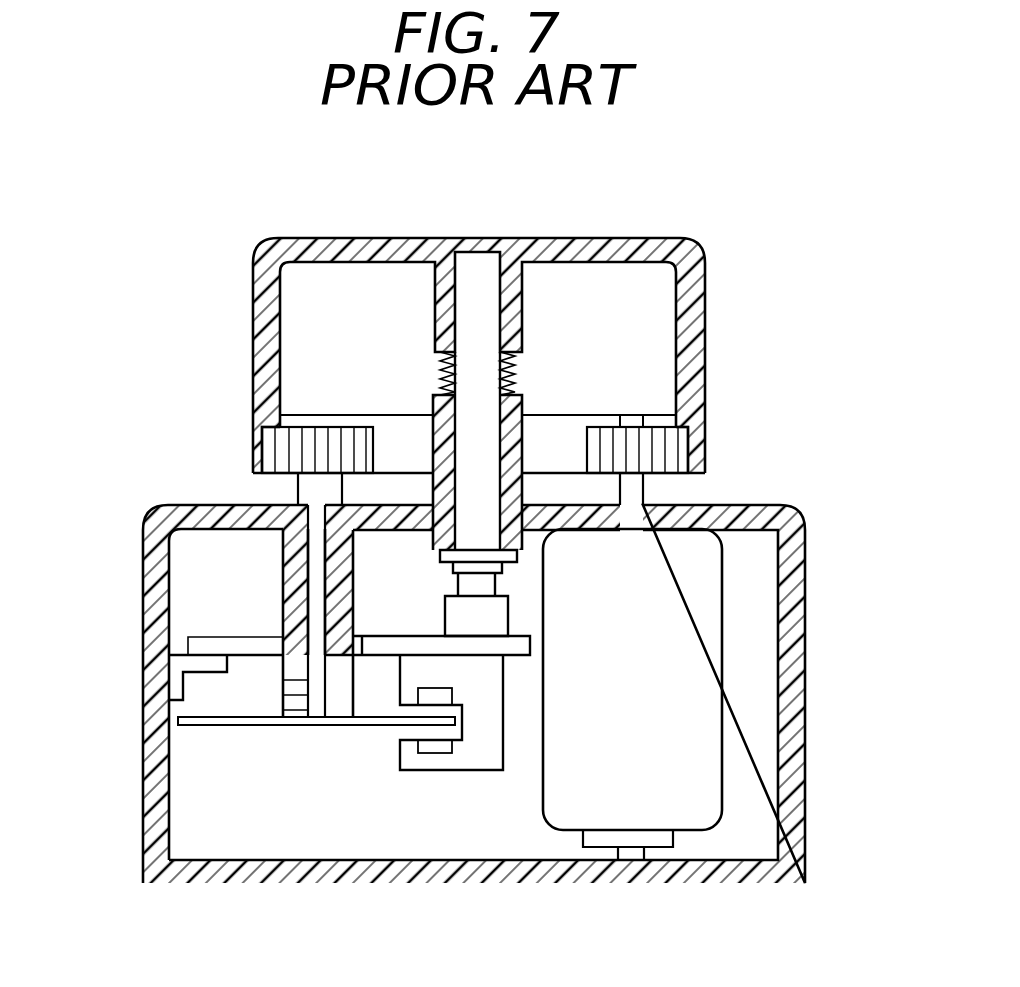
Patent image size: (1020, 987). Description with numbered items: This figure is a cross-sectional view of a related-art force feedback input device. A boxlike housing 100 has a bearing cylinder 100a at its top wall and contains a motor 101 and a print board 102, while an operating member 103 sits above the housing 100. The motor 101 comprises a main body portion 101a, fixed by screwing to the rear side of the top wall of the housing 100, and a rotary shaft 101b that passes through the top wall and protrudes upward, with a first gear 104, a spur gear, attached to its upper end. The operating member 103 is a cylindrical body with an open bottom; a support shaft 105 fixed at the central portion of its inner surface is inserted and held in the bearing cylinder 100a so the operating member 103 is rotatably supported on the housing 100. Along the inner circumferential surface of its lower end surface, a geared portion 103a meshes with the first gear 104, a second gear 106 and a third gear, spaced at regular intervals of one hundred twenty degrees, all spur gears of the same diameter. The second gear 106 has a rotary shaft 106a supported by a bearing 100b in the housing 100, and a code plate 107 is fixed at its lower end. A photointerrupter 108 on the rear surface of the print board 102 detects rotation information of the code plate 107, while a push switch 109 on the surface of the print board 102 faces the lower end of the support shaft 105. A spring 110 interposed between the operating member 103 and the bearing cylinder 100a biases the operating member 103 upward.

The housing 100 is at (797, 515).
The bearing cylinder 100a is at (527, 415).
The bearing 100b is at (293, 596).
The motor 101 is at (722, 752).
The main body portion 101a is at (695, 813).
The rotary shaft 101b is at (633, 493).
The print board 102 is at (208, 643).
The operating member 103 is at (692, 256).
The geared portion 103a is at (270, 440).
The first gear 104 is at (640, 450).
The support shaft 105 is at (478, 277).
The second gear 106 is at (335, 440).
The rotary shaft 106a is at (318, 552).
The code plate 107 is at (250, 720).
The photointerrupter 108 is at (472, 765).
The push switch 109 is at (485, 623).
The spring 110 is at (437, 363).